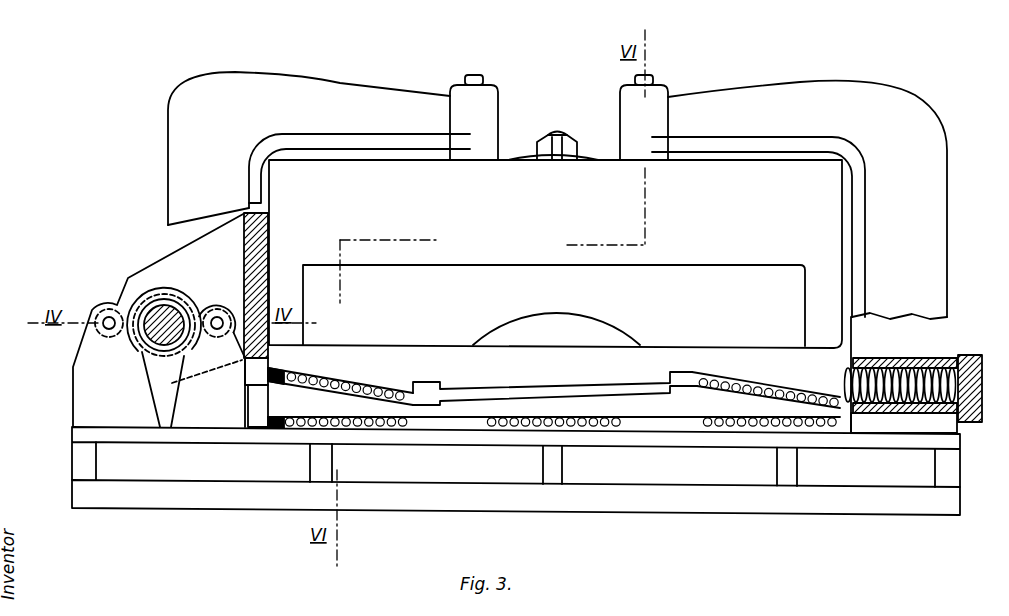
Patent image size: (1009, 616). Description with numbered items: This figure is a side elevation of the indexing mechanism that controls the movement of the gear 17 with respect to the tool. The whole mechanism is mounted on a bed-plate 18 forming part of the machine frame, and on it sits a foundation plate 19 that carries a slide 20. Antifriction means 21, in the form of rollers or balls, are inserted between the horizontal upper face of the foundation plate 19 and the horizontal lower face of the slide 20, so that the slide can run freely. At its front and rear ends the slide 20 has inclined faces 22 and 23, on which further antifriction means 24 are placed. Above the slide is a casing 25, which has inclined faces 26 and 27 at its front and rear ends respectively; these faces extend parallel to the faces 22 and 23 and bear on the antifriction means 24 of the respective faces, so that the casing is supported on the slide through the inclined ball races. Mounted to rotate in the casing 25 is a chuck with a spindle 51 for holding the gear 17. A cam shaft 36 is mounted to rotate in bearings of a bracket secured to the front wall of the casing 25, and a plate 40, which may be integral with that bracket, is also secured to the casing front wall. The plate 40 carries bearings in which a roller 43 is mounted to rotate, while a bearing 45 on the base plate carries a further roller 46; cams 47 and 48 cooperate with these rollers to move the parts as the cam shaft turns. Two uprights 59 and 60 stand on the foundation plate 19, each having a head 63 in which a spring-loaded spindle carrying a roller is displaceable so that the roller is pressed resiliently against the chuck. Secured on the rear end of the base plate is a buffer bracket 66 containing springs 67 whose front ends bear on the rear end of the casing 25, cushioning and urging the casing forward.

The gear 17 is at (520, 157).
The bed-plate 18 is at (632, 508).
The foundation plate 19 is at (658, 440).
The slide 20 is at (638, 355).
The antifriction means 21 is at (615, 425).
The inclined face 22 is at (283, 383).
The inclined face 23 is at (738, 386).
The antifriction means 24 is at (340, 380).
The casing 25 is at (838, 170).
The inclined face 26 is at (396, 388).
The inclined face 27 is at (770, 380).
The cam shaft 36 is at (155, 338).
The plate 40 is at (246, 232).
The roller 43 is at (217, 307).
The bearing 45 is at (80, 392).
The roller 46 is at (102, 308).
The cam 47 is at (142, 290).
The cam 48 is at (172, 370).
The spindle 51 is at (549, 133).
The upright 59 is at (285, 80).
The upright 60 is at (772, 97).
The head 63 is at (495, 110).
The buffer bracket 66 is at (972, 355).
The springs 67 is at (910, 358).